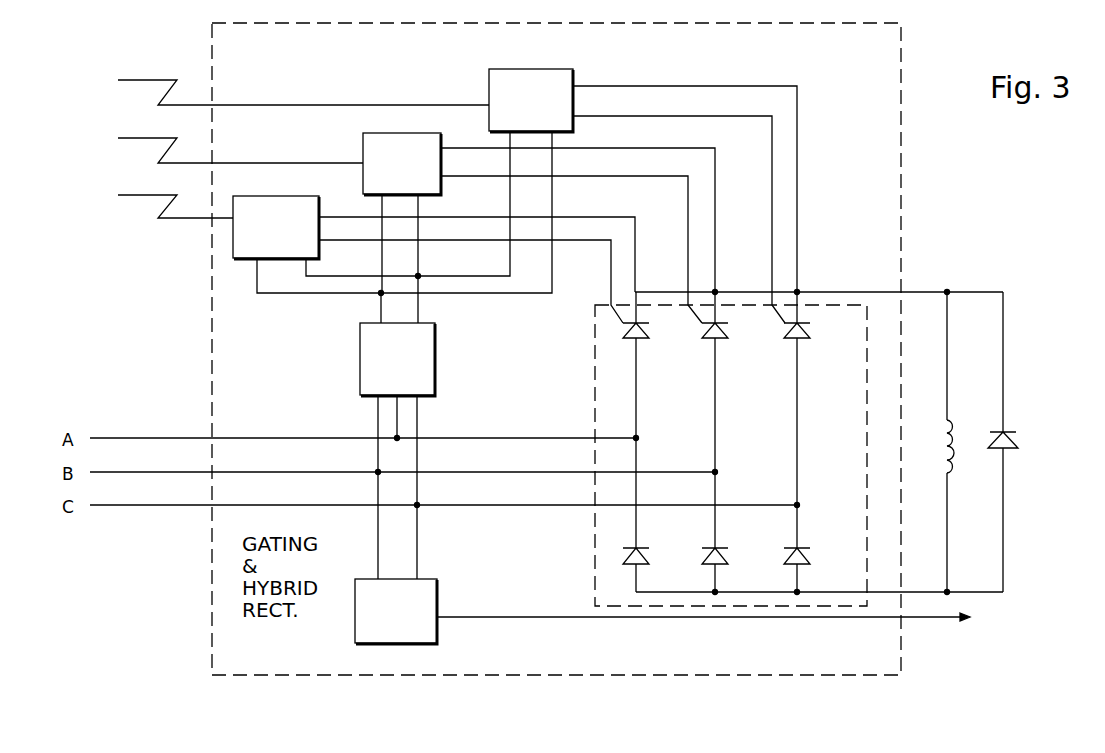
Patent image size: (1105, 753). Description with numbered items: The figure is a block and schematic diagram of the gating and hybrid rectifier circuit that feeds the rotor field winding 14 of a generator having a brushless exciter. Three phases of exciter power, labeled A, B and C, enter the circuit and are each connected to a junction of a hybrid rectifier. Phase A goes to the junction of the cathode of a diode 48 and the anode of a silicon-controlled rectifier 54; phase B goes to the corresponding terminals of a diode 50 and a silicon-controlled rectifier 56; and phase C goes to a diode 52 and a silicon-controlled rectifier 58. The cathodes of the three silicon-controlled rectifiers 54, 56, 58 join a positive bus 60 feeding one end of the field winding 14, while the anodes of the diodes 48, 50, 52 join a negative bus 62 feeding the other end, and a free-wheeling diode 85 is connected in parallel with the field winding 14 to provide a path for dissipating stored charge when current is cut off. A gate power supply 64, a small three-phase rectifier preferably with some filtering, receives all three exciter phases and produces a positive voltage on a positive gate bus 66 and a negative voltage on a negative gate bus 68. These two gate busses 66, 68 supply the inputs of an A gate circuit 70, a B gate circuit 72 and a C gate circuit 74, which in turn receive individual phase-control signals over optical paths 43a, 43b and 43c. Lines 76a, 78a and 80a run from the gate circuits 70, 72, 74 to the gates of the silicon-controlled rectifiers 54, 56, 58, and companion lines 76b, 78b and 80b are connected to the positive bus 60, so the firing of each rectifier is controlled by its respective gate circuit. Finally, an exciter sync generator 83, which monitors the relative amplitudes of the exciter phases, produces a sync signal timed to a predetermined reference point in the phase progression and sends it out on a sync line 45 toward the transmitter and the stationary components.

The field winding 14 is at (952, 450).
The optical path 43a is at (176, 224).
The optical path 43b is at (186, 157).
The optical path 43c is at (186, 99).
The sync line 45 is at (932, 620).
The diode 48 is at (593, 546).
The diode 50 is at (729, 557).
The diode 52 is at (811, 557).
The silicon-controlled rectifier 54 is at (650, 342).
The silicon-controlled rectifier 56 is at (729, 342).
The silicon-controlled rectifier 58 is at (811, 342).
The positive bus 60 is at (920, 287).
The negative bus 62 is at (982, 589).
The gate power supply 64 is at (437, 387).
The positive gate bus 66 is at (325, 291).
The negative gate bus 68 is at (453, 275).
The A gate circuit 70 is at (279, 195).
The B gate circuit 72 is at (388, 131).
The C gate circuit 74 is at (530, 66).
The line 76a is at (558, 240).
The line 76b is at (585, 217).
The line 78a is at (640, 176).
The line 78b is at (640, 148).
The line 80a is at (640, 116).
The line 80b is at (640, 86).
The exciter sync generator 83 is at (438, 603).
The free-wheeling diode 85 is at (1010, 428).